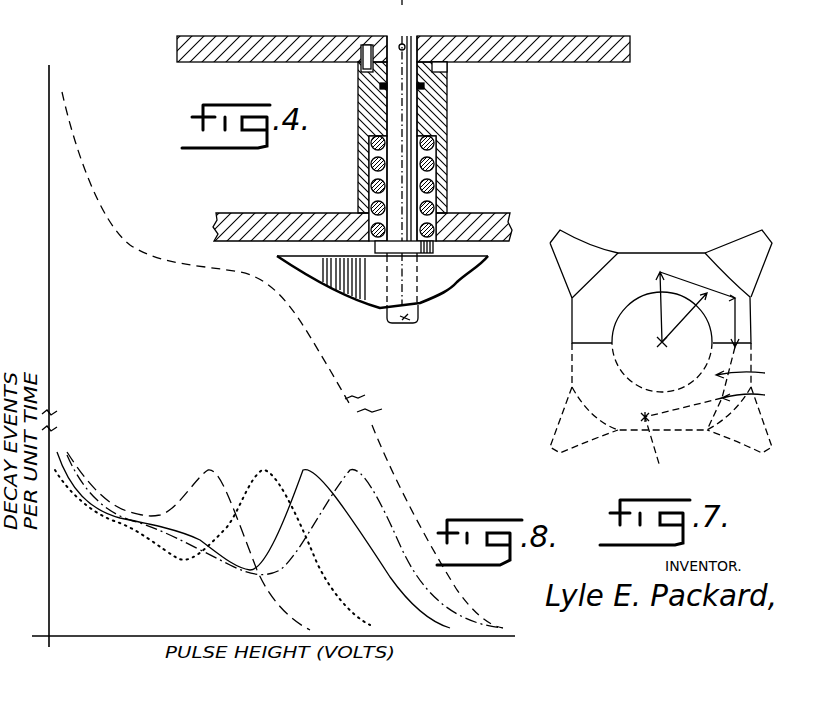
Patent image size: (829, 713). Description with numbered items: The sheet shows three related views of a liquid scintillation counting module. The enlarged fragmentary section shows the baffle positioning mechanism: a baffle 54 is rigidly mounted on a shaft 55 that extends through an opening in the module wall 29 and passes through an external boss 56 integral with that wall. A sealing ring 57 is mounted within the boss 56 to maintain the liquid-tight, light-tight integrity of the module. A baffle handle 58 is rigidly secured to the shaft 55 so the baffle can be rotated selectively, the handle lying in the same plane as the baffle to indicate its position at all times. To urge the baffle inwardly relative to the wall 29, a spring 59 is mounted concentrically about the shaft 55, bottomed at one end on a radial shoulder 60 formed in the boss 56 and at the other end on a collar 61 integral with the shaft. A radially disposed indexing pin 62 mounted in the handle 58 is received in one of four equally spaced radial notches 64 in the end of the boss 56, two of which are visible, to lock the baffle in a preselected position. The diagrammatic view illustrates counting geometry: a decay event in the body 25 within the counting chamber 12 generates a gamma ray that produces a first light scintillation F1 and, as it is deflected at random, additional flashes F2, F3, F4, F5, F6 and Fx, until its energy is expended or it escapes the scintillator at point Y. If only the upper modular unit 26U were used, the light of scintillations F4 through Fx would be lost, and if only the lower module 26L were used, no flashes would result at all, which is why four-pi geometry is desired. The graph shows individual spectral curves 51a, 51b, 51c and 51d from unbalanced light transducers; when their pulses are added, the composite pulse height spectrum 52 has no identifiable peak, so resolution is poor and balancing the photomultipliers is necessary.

In FIG. 4, the baffle handle 58 is at (490, 38).
In FIG. 4, the indexing pin 62 is at (368, 45).
In FIG. 4, the radial notches 64 is at (360, 68).
In FIG. 4, the sealing ring 57 is at (380, 86).
In FIG. 4, the external boss 56 is at (440, 113).
In FIG. 4, the radial shoulder 60 is at (430, 143).
In FIG. 4, the spring 59 is at (431, 158).
In FIG. 4, the module wall 29 is at (503, 213).
In FIG. 4, the collar 61 is at (430, 247).
In FIG. 4, the baffle 54 is at (450, 284).
In FIG. 4, the shaft 55 is at (405, 312).
In FIG. 8, the composite pulse height spectrum 52 is at (318, 338).
In FIG. 7, the upper modular unit 26U is at (655, 253).
In FIG. 7, the lower module 26L is at (691, 432).
In FIG. 7, the counting chamber 12 is at (618, 321).
In FIG. 7, the body 25 is at (664, 347).
In FIG. 7, the light scintillation F1 is at (662, 270).
In FIG. 7, the light flash F2 is at (705, 296).
In FIG. 7, the light flash F3 is at (737, 299).
In FIG. 7, the light flash F4 is at (736, 348).
In FIG. 7, the light flash F5 is at (751, 374).
In FIG. 7, the light flash F6 is at (754, 396).
In FIG. 7, the light flash Fx is at (645, 420).
In FIG. 7, the escape point Y is at (657, 474).
In FIG. 8, the spectral curve 51a is at (200, 490).
In FIG. 8, the spectral curve 51b is at (262, 470).
In FIG. 8, the spectral curve 51c is at (304, 470).
In FIG. 8, the spectral curve 51d is at (356, 470).